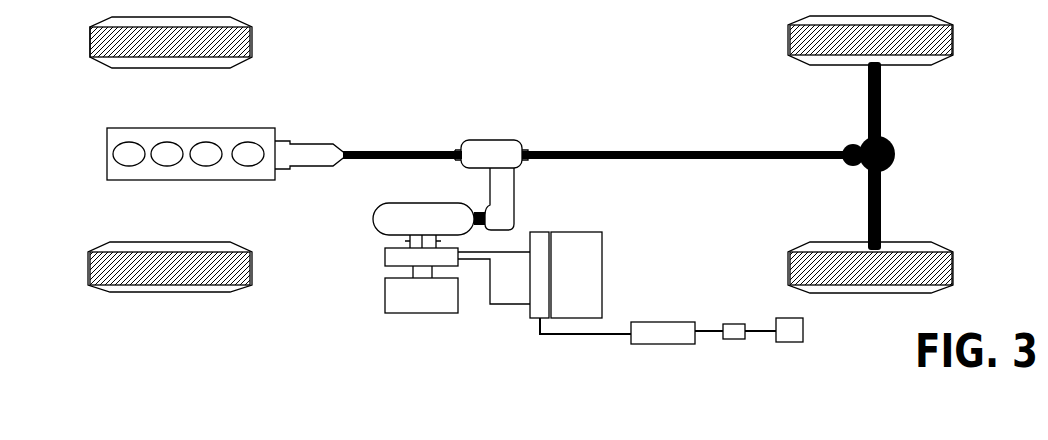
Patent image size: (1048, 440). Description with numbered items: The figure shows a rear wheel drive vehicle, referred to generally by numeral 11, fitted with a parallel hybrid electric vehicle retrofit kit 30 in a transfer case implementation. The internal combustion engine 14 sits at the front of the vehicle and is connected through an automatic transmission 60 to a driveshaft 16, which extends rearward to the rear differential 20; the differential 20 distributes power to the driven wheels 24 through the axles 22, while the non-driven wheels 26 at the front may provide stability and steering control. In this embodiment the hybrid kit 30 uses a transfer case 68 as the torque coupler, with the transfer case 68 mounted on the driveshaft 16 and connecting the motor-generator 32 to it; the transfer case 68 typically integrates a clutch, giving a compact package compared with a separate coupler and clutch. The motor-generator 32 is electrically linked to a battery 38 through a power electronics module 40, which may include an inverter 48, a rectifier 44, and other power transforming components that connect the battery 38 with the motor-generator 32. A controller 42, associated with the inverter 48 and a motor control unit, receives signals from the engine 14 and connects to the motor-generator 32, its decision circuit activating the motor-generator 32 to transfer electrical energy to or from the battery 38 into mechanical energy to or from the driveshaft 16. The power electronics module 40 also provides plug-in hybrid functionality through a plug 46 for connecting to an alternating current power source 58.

The hybrid vehicle powertrain 11 is at (352, 93).
The internal combustion engine 14 is at (224, 128).
The driveshaft 16 is at (383, 149).
The rear differential 20 is at (889, 136).
The axles 22 is at (882, 98).
The driven wheels 24 is at (955, 58).
The non-driven wheels 26 is at (90, 55).
The hybrid kit 30 is at (278, 292).
The motor-generator 32 is at (386, 204).
The battery 38 is at (578, 243).
The power electronics module 40 is at (536, 240).
The controller 42 is at (337, 318).
The rectifier 44 is at (682, 321).
The plug 46 is at (735, 324).
The inverter 48 is at (390, 257).
The alternating current power source 58 is at (782, 318).
The automatic transmission 60 is at (289, 140).
The transfer case 68 is at (469, 141).